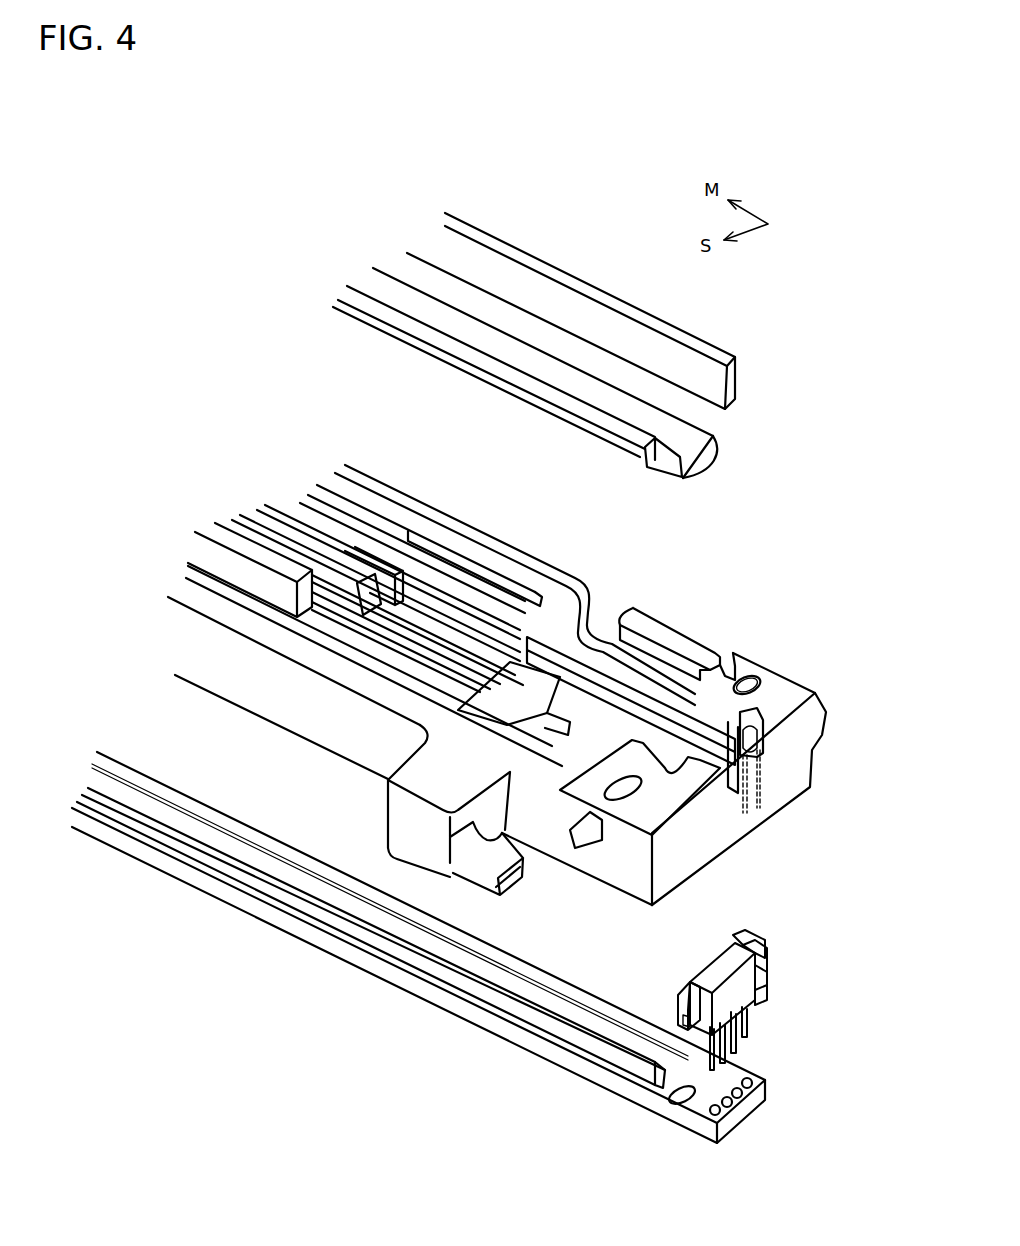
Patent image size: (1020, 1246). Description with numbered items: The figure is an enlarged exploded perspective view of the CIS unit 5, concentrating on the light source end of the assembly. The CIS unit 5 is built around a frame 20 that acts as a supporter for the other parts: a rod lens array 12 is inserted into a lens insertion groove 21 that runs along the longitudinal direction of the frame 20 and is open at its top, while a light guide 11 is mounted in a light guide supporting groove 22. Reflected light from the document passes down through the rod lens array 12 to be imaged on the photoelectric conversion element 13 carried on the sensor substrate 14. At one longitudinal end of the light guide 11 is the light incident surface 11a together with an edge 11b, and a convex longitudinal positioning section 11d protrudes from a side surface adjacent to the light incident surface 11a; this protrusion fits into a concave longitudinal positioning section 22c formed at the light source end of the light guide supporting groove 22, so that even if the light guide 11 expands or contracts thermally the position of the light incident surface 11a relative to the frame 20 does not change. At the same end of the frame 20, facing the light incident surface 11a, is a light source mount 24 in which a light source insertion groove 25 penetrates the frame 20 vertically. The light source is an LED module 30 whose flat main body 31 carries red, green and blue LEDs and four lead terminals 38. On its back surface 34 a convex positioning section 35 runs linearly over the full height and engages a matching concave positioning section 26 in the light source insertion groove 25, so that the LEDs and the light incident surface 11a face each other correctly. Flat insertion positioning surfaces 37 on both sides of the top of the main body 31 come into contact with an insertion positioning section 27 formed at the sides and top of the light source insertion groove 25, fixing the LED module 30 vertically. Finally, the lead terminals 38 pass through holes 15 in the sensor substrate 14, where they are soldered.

The CIS unit 5 is at (255, 250).
The light guide 11 is at (583, 398).
The light incident surface 11a is at (697, 455).
The tip edge of fixing member 11b is at (706, 430).
The convex longitudinal positioning section 11d is at (663, 470).
The rod lens array 12 is at (700, 352).
The photoelectric conversion element 13 is at (640, 1038).
The sensor substrate 14 is at (427, 953).
The holes 15 is at (727, 1115).
The frame 20 is at (516, 685).
The lens insertion groove 21 is at (678, 703).
The light guide supporting groove 22 is at (612, 738).
The concave longitudinal positioning section 22c is at (728, 760).
The light source mount 24 is at (780, 717).
The light source insertion groove 25 is at (752, 705).
The concave positioning section 26 is at (758, 737).
The insertion positioning section 27 is at (755, 727).
The LED module 30 is at (746, 966).
The main body 31 is at (765, 948).
The back surface 34 is at (723, 1000).
The convex positioning section 35 is at (762, 972).
The insertion positioning surfaces 37 is at (752, 935).
The lead terminals 38 is at (750, 1035).